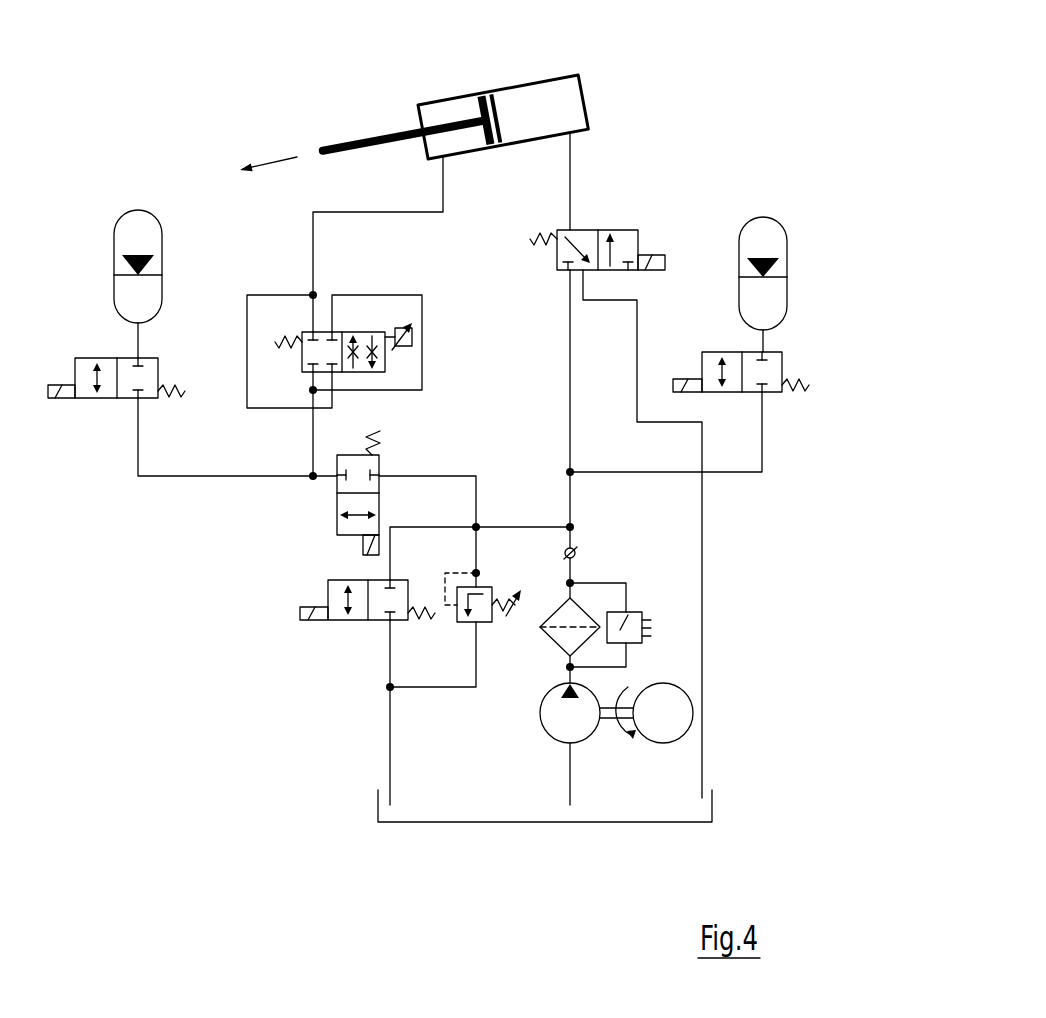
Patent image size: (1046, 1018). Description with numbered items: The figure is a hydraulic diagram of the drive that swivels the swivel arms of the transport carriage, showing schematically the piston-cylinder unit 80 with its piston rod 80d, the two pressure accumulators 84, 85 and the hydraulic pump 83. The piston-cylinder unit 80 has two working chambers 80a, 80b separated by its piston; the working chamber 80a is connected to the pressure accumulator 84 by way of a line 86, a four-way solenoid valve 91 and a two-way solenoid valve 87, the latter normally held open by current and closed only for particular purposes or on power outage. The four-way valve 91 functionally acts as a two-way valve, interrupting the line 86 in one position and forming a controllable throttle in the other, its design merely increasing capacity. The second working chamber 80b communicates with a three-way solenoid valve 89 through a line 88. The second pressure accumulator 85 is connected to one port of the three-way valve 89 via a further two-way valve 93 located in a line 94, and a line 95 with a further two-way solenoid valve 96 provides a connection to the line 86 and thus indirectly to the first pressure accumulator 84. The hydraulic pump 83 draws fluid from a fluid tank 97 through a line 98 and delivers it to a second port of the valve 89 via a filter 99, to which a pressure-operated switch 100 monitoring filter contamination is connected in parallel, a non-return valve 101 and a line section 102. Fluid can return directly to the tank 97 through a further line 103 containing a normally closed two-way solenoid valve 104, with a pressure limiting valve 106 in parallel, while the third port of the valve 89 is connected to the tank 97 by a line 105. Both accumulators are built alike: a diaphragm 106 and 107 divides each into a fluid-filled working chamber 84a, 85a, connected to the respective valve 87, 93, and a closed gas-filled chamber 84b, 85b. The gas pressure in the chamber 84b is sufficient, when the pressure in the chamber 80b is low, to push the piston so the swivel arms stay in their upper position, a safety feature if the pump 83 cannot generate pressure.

The piston-cylinder unit 80 is at (527, 85).
The working chamber 80a is at (450, 112).
The second working chamber 80b is at (557, 98).
The piston rod 80d is at (368, 137).
The hydraulic pump 83 is at (577, 730).
The pressure accumulator 84 is at (124, 239).
The working chamber 84a is at (123, 302).
The second working chamber 84b is at (152, 233).
The second pressure accumulator 85 is at (810, 233).
The working chamber 85a is at (770, 320).
The second working chamber 85b is at (767, 243).
The line 86 is at (383, 213).
The 2/2-way solenoid valve 87 is at (112, 392).
The line 88 is at (570, 147).
The 2/3-way solenoid valve 89 is at (620, 248).
The 2/4-way solenoid valve 91 is at (304, 352).
The 2/2-way valve 93 is at (772, 367).
The line 94 is at (762, 423).
The line 95 is at (438, 473).
The 2/2-way solenoid valve 96 is at (337, 505).
The fluid tank 97 is at (507, 823).
The line 98 is at (568, 788).
The filter 99 is at (541, 650).
The pressure-operated switch 100 is at (636, 612).
The non-return valve 101 is at (575, 552).
The line section 102 is at (570, 490).
The line 103 is at (423, 527).
The 2/2-way solenoid valve 104 is at (335, 593).
The line 105 is at (702, 520).
The pressure limiting valve 106 is at (142, 280).
The diaphragm 107 is at (773, 278).